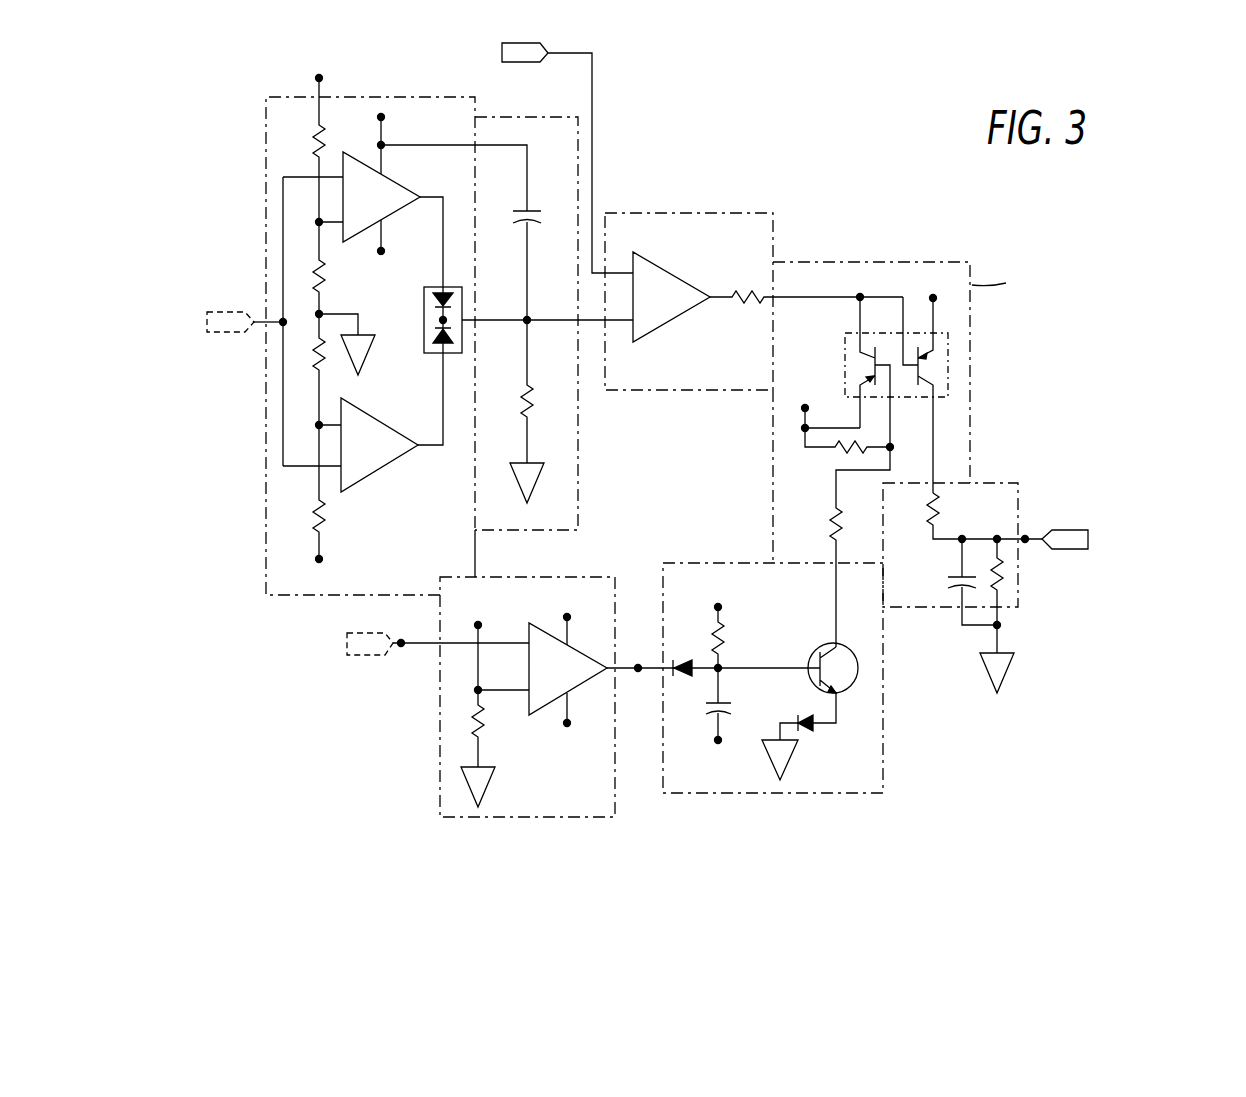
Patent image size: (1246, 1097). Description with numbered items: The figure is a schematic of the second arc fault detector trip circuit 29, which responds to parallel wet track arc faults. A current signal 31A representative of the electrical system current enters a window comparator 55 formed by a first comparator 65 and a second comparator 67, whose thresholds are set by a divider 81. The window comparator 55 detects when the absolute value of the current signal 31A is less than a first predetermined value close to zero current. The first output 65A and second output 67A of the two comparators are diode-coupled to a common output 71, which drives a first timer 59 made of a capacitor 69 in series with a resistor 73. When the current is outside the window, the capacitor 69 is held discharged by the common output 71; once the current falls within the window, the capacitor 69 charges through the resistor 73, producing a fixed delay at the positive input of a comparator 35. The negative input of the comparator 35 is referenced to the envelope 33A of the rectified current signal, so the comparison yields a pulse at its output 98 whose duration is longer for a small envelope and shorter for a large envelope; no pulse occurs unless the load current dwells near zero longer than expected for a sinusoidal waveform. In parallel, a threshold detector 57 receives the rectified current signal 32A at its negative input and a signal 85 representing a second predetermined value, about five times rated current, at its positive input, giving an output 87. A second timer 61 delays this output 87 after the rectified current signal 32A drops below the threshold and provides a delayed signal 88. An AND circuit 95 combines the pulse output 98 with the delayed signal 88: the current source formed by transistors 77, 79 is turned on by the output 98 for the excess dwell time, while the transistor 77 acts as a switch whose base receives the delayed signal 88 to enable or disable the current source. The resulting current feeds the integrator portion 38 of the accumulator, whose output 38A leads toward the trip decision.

The second arc fault detector trip circuit 29 is at (668, 877).
The current signal 31A is at (266, 318).
The rectified current signal 32A is at (400, 648).
The envelope of the rectified current signal 33A is at (561, 52).
The comparator 35 is at (667, 272).
The integrator portion 38 is at (1020, 597).
The output of the integrator portion 38A is at (1027, 532).
The window comparator 55 is at (266, 540).
The threshold detector 57 is at (535, 818).
The first timer 59 is at (578, 452).
The second timer 61 is at (810, 795).
The first comparator 65 is at (353, 150).
The first output 65A is at (421, 196).
The second comparator 67 is at (377, 478).
The second output 67A is at (418, 443).
The capacitor 69 is at (533, 210).
The common output 71 is at (438, 318).
The resistor 73 is at (520, 399).
The transistor 77 is at (858, 360).
The transistor 79 is at (937, 380).
The divider 81 is at (307, 127).
The signal representative of a second predetermined value 85 is at (500, 692).
The output 87 is at (639, 672).
The delayed signal 88 is at (833, 568).
The AND circuit 95 is at (972, 415).
The output 98 is at (724, 300).